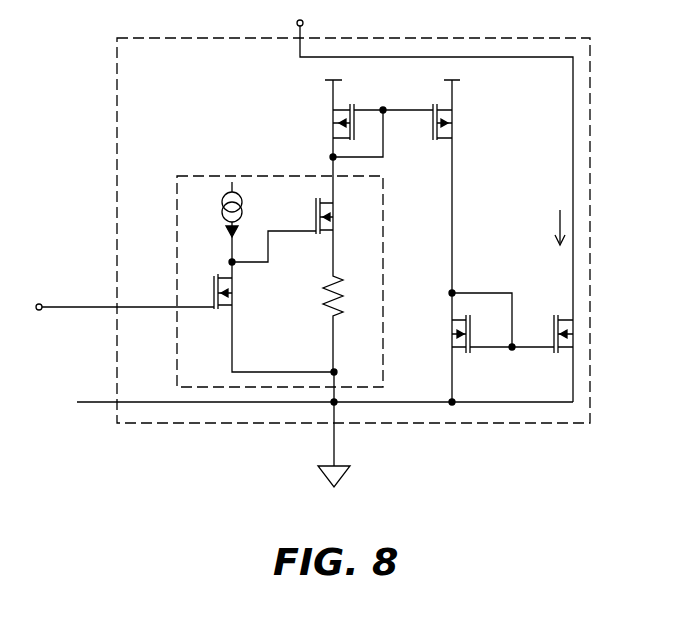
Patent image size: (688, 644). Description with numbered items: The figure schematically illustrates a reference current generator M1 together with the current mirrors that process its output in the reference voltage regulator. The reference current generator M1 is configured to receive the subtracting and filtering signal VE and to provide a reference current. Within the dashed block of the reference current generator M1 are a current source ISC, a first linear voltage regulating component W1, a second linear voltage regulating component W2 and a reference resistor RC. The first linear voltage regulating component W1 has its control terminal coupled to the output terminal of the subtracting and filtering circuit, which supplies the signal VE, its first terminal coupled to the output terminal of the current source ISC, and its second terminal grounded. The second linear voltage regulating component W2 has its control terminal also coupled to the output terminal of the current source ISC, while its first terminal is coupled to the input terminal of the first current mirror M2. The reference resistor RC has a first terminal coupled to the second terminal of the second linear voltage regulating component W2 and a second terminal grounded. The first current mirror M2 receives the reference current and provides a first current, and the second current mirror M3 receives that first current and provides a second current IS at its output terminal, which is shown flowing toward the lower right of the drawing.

The reference current generator M1 is at (235, 175).
The first current mirror M2 is at (391, 148).
The second current mirror M3 is at (445, 336).
The first linear voltage regulating component W1 is at (274, 317).
The second linear voltage regulating component W2 is at (300, 214).
The reference resistor RC is at (316, 323).
The current source ISC is at (246, 223).
The subtracting and filtering signal VE is at (125, 296).
The second current IS is at (549, 227).